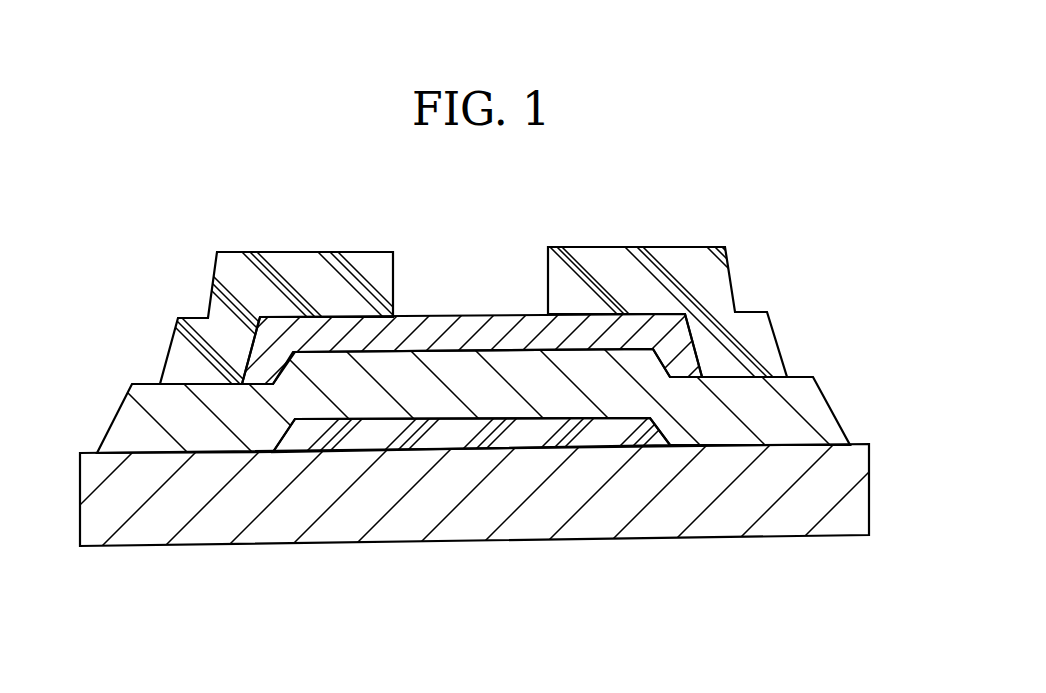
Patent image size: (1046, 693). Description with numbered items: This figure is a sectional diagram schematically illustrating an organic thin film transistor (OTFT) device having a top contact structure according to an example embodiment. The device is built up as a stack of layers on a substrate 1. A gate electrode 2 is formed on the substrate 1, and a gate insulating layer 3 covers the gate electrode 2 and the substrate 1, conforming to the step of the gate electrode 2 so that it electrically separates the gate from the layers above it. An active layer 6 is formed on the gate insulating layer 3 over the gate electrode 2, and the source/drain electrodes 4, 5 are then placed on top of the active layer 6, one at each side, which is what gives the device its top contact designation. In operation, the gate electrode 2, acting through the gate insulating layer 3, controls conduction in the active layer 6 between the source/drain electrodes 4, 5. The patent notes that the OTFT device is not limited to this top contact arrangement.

The substrate 1 is at (673, 522).
The gate electrode 2 is at (355, 438).
The gate insulating layer 3 is at (805, 388).
The source electrode 4 is at (232, 277).
The drain electrode 5 is at (710, 278).
The active layer 6 is at (510, 325).